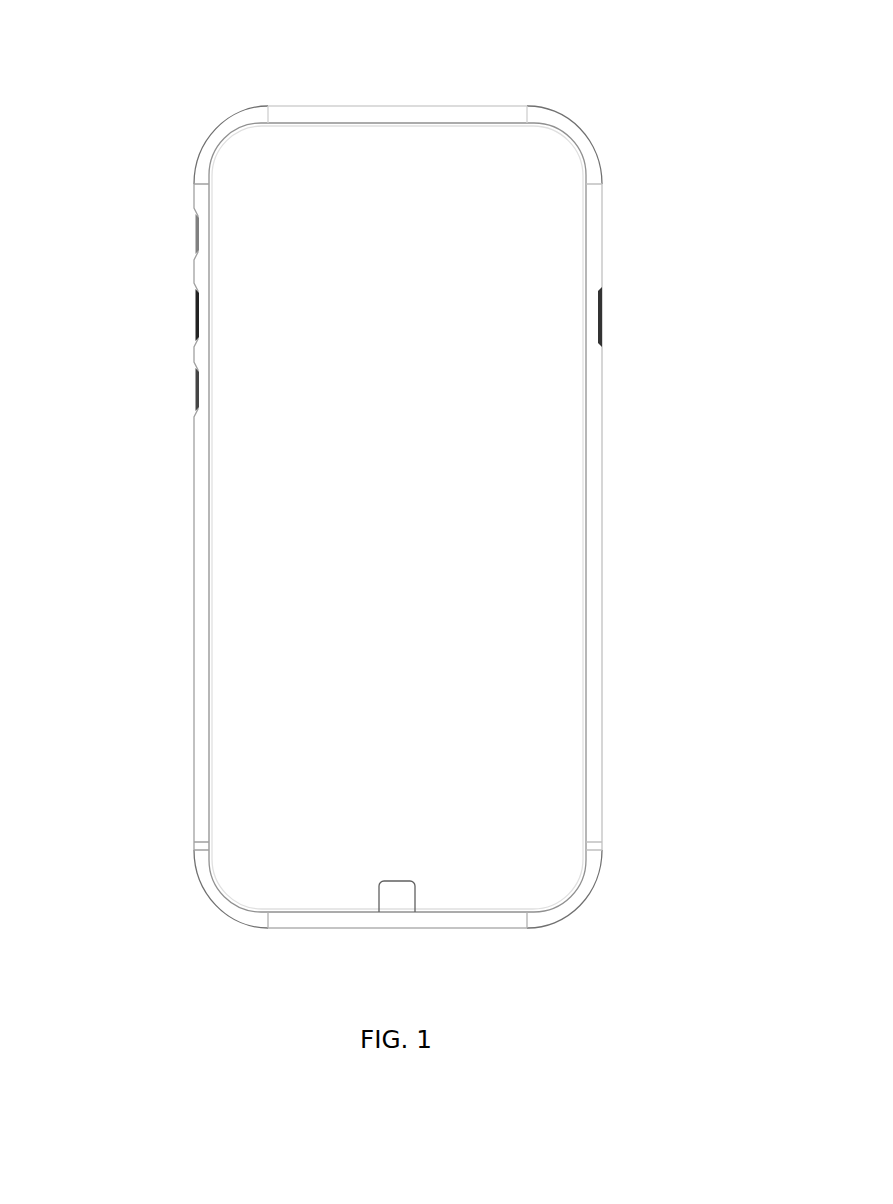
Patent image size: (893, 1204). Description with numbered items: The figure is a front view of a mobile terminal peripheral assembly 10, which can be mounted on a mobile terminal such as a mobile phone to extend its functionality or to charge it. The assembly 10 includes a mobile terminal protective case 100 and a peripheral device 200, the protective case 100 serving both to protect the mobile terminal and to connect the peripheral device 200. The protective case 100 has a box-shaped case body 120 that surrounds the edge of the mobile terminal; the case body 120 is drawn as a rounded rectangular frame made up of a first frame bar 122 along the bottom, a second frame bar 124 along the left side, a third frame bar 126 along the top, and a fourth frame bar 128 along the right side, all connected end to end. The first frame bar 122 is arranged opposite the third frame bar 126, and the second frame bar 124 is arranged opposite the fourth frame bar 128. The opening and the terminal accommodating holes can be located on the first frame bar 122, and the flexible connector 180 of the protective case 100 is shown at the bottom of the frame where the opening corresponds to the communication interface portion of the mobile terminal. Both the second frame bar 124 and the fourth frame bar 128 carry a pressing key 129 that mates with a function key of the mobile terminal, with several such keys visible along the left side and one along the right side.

The mobile terminal peripheral assembly 10 is at (70, 44).
The mobile terminal protective case 100 is at (617, 141).
The case body 120 is at (617, 228).
The first frame bar 122 is at (463, 922).
The second frame bar 124 is at (202, 637).
The third frame bar 126 is at (329, 113).
The fourth frame bar 128 is at (588, 483).
The pressing key 129 is at (195, 330).
The flexible connector 180 is at (387, 895).
The peripheral device 200 is at (484, 571).